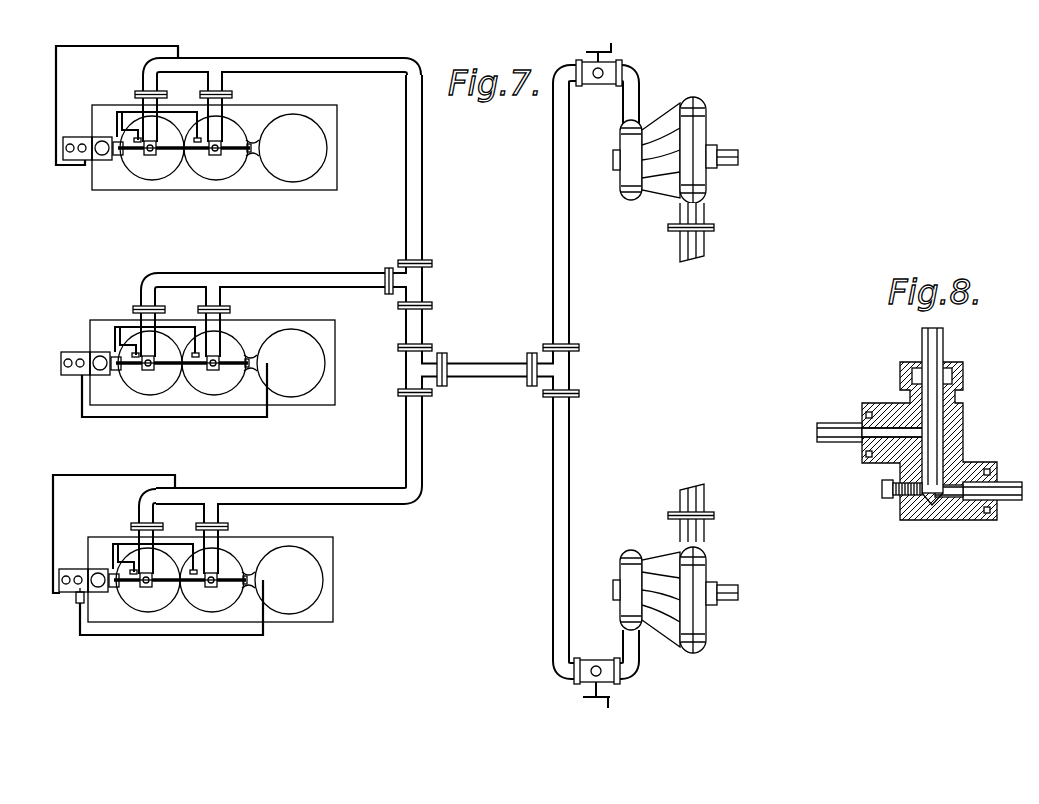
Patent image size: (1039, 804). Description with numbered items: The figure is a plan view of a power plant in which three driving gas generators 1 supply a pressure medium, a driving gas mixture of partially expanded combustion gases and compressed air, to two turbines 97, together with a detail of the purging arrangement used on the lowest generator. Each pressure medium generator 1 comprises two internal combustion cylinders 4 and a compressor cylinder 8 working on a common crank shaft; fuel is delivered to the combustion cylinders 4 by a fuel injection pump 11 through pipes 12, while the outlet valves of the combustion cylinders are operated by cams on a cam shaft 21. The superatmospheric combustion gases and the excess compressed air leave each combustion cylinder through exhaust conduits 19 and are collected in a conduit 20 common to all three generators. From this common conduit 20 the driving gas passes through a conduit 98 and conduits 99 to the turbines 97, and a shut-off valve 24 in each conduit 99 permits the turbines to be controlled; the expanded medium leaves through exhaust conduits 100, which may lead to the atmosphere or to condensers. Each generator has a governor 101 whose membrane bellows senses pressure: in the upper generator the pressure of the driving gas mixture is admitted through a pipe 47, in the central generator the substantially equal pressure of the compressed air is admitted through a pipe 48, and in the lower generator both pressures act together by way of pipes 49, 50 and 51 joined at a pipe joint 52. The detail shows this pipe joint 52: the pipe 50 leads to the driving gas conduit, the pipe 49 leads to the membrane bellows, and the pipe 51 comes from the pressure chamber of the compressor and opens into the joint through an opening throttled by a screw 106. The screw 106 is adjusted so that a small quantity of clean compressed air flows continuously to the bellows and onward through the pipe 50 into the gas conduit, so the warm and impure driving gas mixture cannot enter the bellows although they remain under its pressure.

In FIG. 7, the pressure medium generator 1 is at (316, 183).
In FIG. 7, the internal combustion cylinders 4 is at (200, 166).
In FIG. 7, the compressor cylinder 8 is at (275, 172).
In FIG. 7, the fuel injection pump 11 is at (118, 153).
In FIG. 7, the pipes 12 is at (123, 114).
In FIG. 7, the exhaust conduits 19 is at (205, 63).
In FIG. 7, the conduit 20 is at (424, 328).
In FIG. 7, the cam shaft 21 is at (232, 150).
In FIG. 7, the shut-off valve 24 is at (600, 86).
In FIG. 7, the pipe 47 is at (108, 46).
In FIG. 7, the pipe 48 is at (210, 418).
In FIG. 7, the pipe 49 is at (58, 585).
In FIG. 8, the pipe 49 is at (925, 350).
In FIG. 7, the pipe 50 is at (54, 520).
In FIG. 8, the pipe 50 is at (824, 423).
In FIG. 7, the pipe 51 is at (254, 636).
In FIG. 8, the pipe 51 is at (1010, 500).
In FIG. 7, the pipe joint 52 is at (79, 604).
In FIG. 8, the pipe joint 52 is at (963, 411).
In FIG. 7, the turbines 97 is at (622, 178).
In FIG. 7, the conduit 98 is at (467, 362).
In FIG. 7, the conduits 99 is at (553, 321).
In FIG. 7, the exhaust conduits 100 is at (678, 247).
In FIG. 7, the governors 101 is at (100, 157).
In FIG. 8, the screw 106 is at (910, 498).